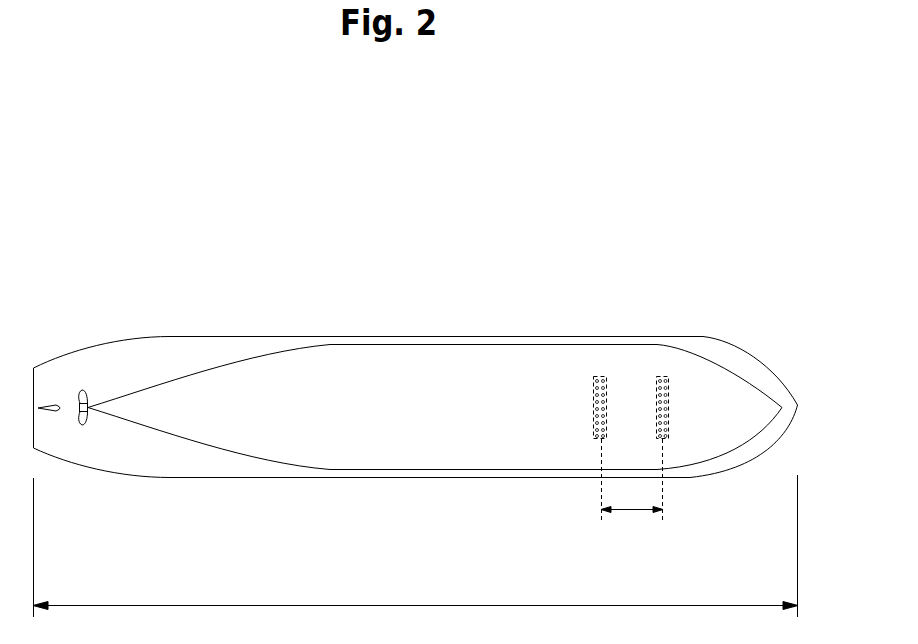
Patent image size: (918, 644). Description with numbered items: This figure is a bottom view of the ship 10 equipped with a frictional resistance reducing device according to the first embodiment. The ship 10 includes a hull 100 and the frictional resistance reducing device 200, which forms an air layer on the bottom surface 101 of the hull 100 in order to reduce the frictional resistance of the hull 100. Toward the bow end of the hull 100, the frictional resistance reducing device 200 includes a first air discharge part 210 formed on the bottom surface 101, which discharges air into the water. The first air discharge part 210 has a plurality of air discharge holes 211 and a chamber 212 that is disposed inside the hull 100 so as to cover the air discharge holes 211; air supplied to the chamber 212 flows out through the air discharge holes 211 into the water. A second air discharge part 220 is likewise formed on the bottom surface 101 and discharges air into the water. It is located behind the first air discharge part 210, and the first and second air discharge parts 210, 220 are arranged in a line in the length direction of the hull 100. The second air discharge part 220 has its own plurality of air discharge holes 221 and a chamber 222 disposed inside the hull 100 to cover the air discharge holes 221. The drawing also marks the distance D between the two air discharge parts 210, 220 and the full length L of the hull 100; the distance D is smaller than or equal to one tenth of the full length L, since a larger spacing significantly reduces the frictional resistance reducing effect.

The ship 10 is at (10, 142).
The hull 100 is at (311, 338).
The bottom surface 101 is at (343, 443).
The frictional resistance reducing device 200 is at (737, 225).
The first air discharge part 210 is at (653, 262).
The air discharge holes 211 is at (664, 378).
The chamber 212 is at (669, 385).
The second air discharge part 220 is at (568, 262).
The air discharge holes 221 is at (601, 378).
The chamber 222 is at (608, 385).